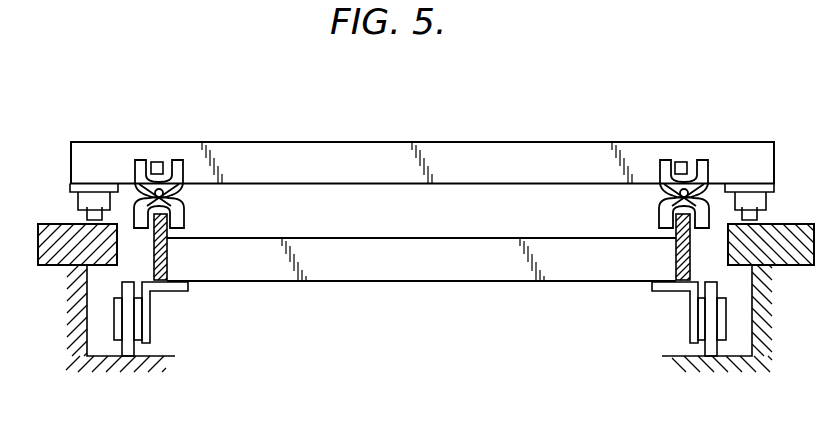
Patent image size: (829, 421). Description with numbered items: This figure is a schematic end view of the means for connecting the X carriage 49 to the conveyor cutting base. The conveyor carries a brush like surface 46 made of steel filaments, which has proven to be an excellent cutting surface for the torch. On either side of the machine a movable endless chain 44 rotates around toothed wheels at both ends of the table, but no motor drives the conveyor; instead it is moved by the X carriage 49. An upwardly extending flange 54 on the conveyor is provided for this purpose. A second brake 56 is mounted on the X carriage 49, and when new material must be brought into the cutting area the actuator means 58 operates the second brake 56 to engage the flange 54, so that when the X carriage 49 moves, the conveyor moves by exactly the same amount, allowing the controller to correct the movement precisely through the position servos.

The movable endless chain 44 is at (145, 318).
The brush like surface 46 is at (388, 262).
The X carriage 49 is at (405, 162).
The upwardly extending flange 54 is at (167, 243).
The second brake 56 is at (143, 171).
The actuator means 58 is at (157, 162).